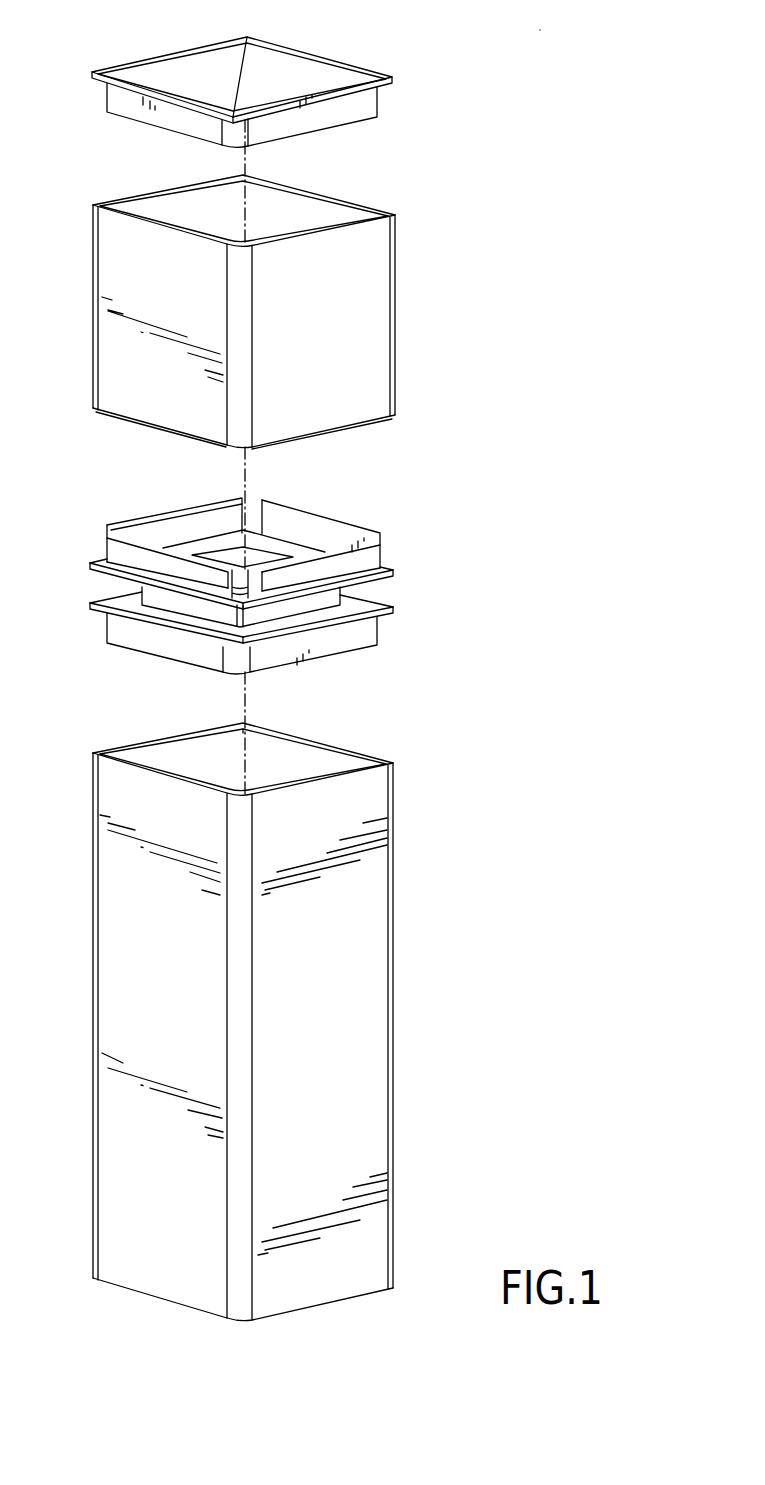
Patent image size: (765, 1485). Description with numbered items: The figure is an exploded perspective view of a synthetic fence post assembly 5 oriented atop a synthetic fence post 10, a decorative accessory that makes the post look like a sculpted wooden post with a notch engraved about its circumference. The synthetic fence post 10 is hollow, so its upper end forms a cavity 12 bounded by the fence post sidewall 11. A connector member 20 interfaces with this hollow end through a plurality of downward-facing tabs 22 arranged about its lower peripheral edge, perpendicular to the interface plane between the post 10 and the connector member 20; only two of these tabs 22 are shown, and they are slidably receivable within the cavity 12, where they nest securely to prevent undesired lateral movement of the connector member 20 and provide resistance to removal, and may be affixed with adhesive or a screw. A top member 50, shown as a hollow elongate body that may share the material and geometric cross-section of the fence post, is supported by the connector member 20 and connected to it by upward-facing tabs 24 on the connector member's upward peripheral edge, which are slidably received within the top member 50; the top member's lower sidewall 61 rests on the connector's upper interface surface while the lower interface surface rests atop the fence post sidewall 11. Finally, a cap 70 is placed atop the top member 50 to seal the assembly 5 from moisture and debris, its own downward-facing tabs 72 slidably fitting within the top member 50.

The synthetic fence post assembly 5 is at (528, 23).
The synthetic fence post 10 is at (280, 1012).
The fence post sidewall 11 is at (293, 733).
The cavity 12 is at (318, 765).
The connector member 20 is at (306, 587).
The downward-facing tabs 22 is at (327, 658).
The upward-facing tabs 24 is at (347, 520).
The top member 50 is at (278, 321).
The lower sidewall 61 is at (367, 423).
The cap 70 is at (280, 98).
The downward-facing tabs 72 is at (333, 128).